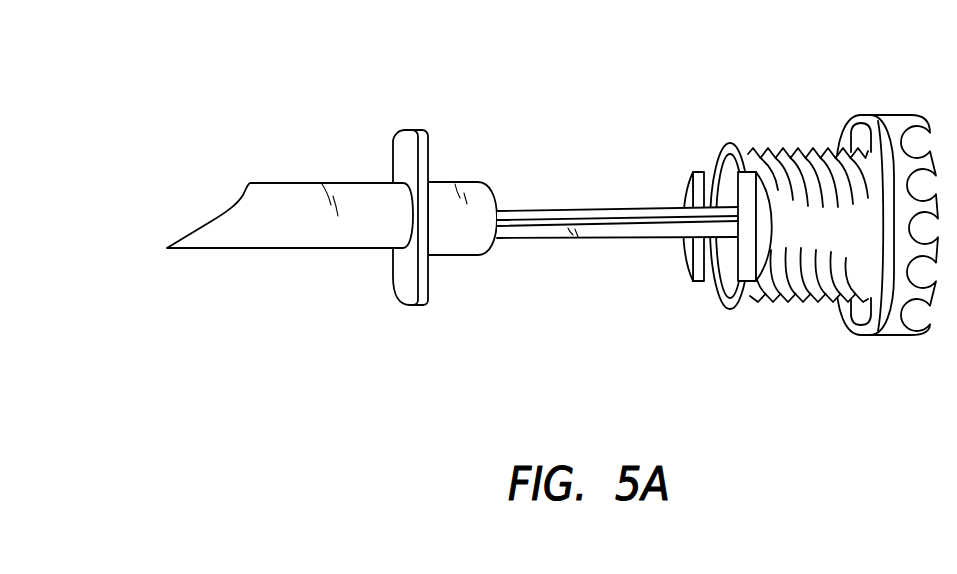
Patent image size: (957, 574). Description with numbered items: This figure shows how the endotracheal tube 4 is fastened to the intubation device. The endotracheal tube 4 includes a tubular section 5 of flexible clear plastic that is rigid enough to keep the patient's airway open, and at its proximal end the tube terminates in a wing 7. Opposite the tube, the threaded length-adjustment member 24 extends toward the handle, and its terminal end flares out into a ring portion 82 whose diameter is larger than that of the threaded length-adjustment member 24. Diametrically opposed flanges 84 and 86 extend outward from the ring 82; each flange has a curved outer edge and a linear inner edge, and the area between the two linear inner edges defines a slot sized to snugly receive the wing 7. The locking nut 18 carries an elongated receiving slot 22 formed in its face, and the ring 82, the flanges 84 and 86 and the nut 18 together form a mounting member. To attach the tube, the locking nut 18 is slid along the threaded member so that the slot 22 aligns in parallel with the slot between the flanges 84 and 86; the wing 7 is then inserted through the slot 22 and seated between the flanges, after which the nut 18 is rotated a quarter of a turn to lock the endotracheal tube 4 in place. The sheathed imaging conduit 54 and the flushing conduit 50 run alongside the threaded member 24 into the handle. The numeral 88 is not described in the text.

The endotracheal tube 4 is at (332, 219).
The tubular section 5 is at (300, 187).
The wing 7 is at (398, 143).
The locking nut 18 is at (891, 116).
The receiving slot 22 is at (853, 336).
The threaded length-adjustment member 24 is at (813, 152).
The flushing conduit 50 is at (545, 212).
The sheathed imaging conduit 54 is at (558, 238).
The ring portion 82 is at (731, 146).
The flange 84 is at (689, 180).
The flange 86 is at (753, 272).
The ring inner surface 88 is at (727, 291).